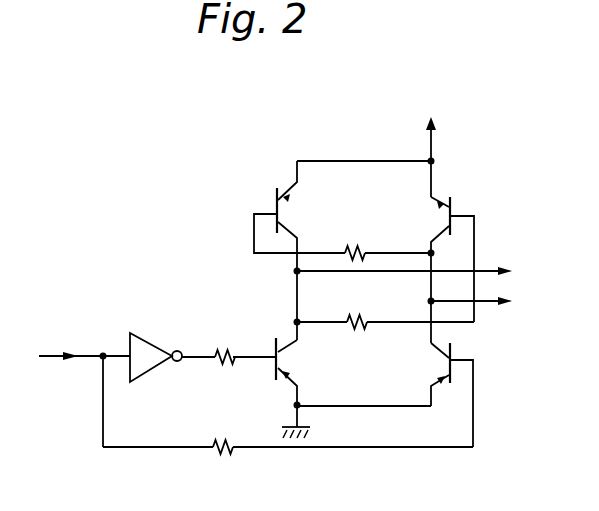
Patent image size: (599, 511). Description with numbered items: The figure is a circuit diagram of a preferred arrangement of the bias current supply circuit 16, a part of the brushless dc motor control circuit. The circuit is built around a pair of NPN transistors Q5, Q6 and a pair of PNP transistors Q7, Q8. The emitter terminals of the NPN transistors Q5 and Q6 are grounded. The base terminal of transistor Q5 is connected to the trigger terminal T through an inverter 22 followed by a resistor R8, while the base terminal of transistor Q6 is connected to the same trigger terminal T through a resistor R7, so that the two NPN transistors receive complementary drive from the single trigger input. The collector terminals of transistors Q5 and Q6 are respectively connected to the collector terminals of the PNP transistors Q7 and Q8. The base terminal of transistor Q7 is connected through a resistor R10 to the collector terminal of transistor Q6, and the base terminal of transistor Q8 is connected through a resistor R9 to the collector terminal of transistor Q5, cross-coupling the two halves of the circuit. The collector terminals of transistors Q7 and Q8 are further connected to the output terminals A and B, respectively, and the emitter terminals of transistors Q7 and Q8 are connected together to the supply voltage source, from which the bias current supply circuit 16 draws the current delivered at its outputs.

The bias current supply circuit 16 is at (243, 164).
The inverter 22 is at (156, 339).
The NPN transistor Q5 is at (283, 367).
The NPN transistor Q6 is at (443, 371).
The PNP transistor Q7 is at (281, 209).
The PNP transistor Q8 is at (442, 219).
The resistor R7 is at (226, 454).
The resistor R8 is at (223, 364).
The resistor R9 is at (355, 330).
The resistor R10 is at (359, 246).